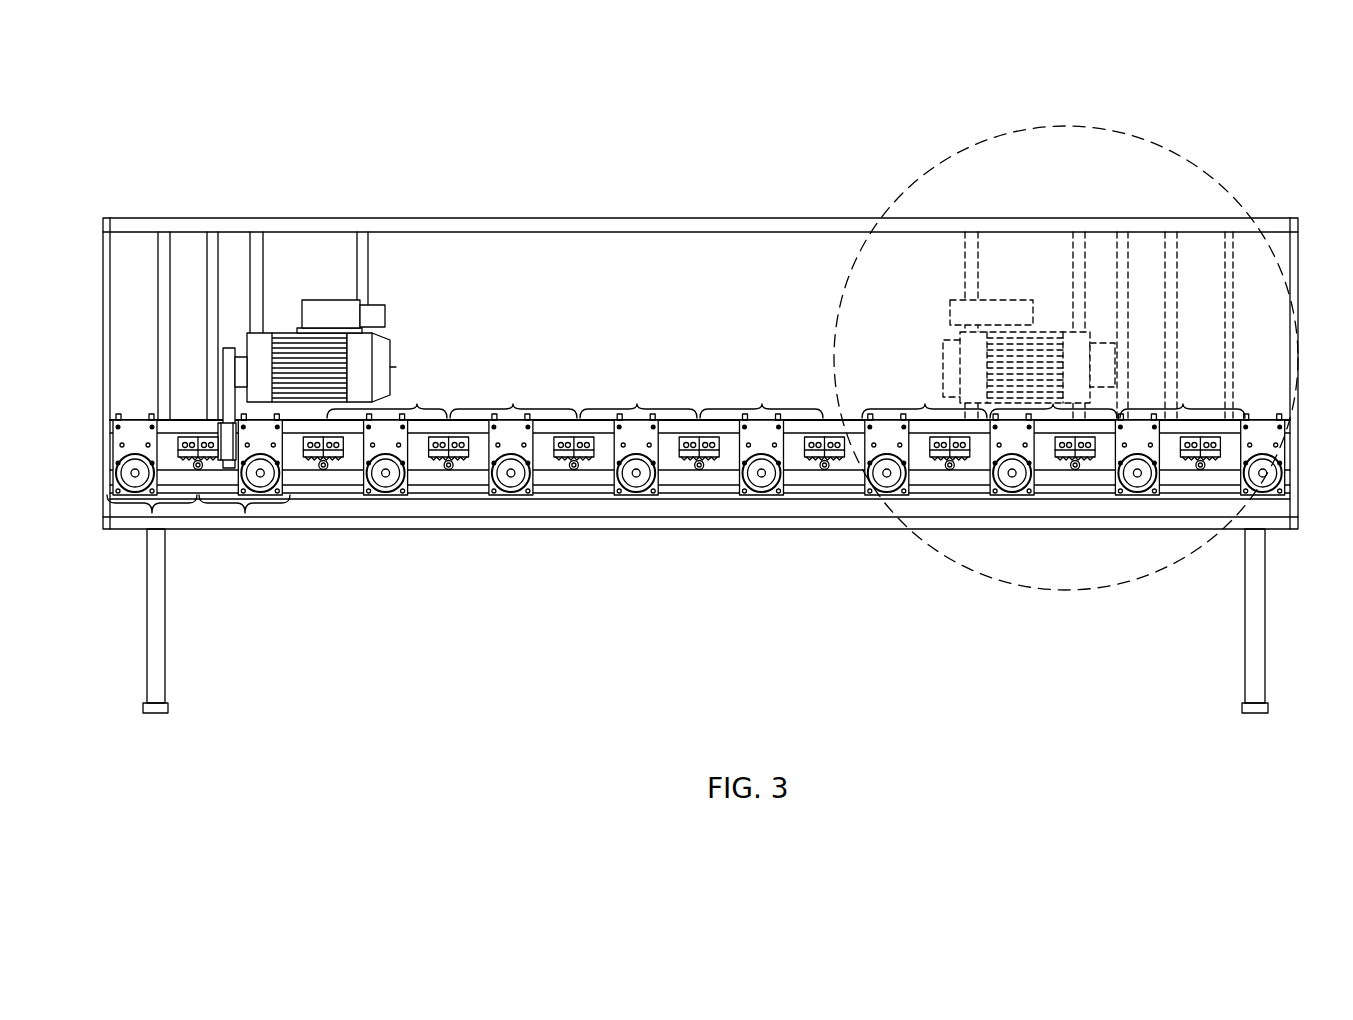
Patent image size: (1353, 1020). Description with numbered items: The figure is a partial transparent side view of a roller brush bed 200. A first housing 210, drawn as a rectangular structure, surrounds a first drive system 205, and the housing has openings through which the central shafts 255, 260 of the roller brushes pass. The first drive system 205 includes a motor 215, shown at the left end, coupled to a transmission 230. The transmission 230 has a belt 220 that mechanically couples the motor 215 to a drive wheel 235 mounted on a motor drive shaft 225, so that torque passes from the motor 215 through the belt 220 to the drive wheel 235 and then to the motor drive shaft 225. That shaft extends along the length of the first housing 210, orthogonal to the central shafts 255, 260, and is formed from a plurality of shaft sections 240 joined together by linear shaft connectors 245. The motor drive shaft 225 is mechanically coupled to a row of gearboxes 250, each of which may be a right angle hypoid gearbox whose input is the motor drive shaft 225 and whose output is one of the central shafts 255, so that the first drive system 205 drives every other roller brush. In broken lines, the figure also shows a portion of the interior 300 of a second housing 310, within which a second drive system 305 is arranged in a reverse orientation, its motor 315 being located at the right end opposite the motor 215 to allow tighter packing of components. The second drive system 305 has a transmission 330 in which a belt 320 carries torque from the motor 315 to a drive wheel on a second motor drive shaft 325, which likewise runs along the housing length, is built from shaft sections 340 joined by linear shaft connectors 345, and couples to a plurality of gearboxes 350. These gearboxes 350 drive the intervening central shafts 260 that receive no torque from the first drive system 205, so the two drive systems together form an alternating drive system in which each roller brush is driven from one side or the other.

The roller brush bed 200 is at (283, 108).
The drive system 205 is at (485, 320).
The first housing 210 is at (252, 218).
The motor 215 is at (391, 347).
The belt 220 is at (223, 372).
The motor drive shaft 225 is at (108, 453).
The transmission 230 is at (165, 303).
The drive wheel 235 is at (216, 434).
The shaft sections 240 is at (465, 456).
The linear shaft connectors 245 is at (182, 458).
The gearboxes 250 is at (131, 424).
The central shafts 255 is at (135, 476).
The central shafts 260 is at (198, 472).
The interior 300 is at (958, 155).
The second drive system 305 is at (931, 291).
The second housing 310 is at (1026, 217).
The motor 315 is at (944, 341).
The belt 320 is at (1116, 358).
The motor drive shaft 325 is at (1300, 443).
The transmission 330 is at (1213, 326).
The shaft sections 340 is at (1053, 396).
The linear shaft connectors 345 is at (877, 497).
The gearboxes 350 is at (937, 495).